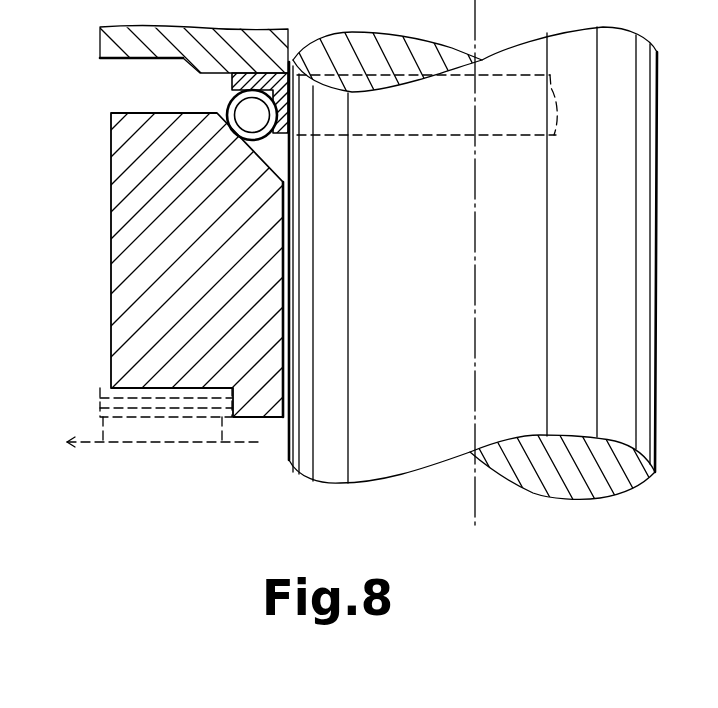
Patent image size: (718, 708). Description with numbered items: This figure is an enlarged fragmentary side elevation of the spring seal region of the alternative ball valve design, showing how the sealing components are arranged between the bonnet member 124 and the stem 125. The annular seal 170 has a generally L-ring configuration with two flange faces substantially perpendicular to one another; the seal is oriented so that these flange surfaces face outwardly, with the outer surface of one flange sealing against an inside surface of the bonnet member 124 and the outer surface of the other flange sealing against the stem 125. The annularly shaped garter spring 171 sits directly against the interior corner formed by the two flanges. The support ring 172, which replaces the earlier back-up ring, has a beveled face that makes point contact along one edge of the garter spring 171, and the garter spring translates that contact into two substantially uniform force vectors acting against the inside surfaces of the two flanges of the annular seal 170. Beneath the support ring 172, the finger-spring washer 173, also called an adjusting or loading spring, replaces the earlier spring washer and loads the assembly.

The bonnet member 124 is at (113, 46).
The annular seal 170 is at (230, 85).
The garter spring 171 is at (228, 109).
The support ring 172 is at (122, 172).
The finger-spring washer 173 is at (95, 402).
The stem 125 is at (642, 117).